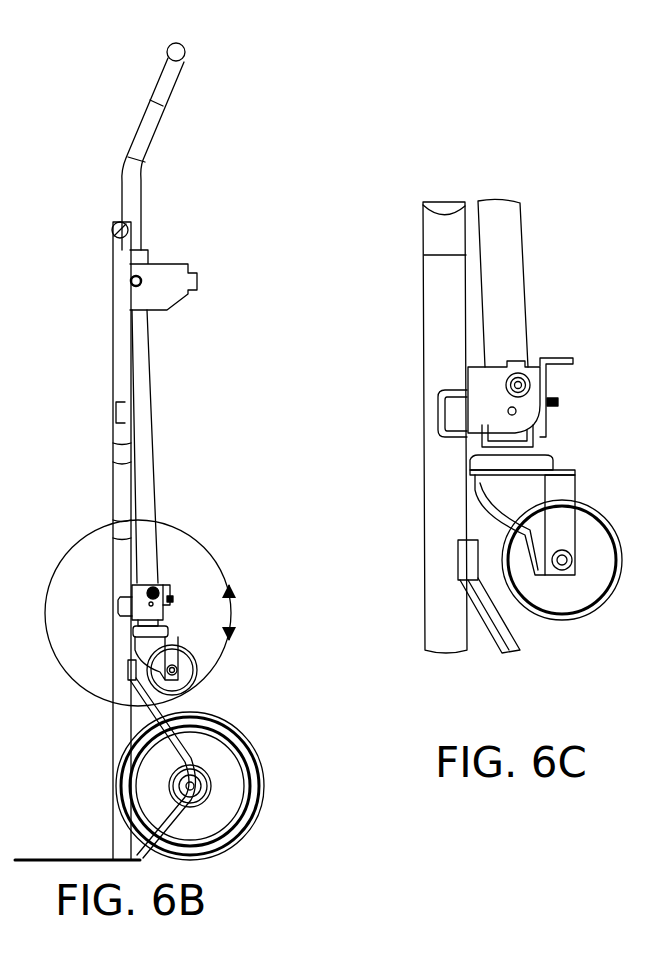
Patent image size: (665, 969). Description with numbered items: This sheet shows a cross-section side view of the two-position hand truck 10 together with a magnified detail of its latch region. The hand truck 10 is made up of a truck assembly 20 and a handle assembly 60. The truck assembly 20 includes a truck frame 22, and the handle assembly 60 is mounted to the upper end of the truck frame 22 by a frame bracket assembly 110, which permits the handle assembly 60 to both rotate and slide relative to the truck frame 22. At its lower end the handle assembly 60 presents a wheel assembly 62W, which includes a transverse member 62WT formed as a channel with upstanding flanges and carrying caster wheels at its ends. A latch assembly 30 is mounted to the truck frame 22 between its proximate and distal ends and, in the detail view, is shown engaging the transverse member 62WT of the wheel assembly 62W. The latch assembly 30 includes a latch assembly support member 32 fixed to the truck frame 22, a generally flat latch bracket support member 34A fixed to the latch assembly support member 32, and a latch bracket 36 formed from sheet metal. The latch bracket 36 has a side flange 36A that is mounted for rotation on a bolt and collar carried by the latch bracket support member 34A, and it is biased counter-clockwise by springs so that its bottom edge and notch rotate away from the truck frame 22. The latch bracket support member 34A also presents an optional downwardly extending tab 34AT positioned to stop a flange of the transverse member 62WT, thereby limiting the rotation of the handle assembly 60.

In FIG. 6B, the two-position hand truck 10 is at (219, 142).
In FIG. 6B, the truck assembly 20 is at (82, 487).
In FIG. 6B, the truck frame 22 is at (100, 325).
In FIG. 6C, the truck frame 22 is at (405, 530).
In FIG. 6B, the latch assembly 30 is at (157, 640).
In FIG. 6C, the latch assembly 30 is at (586, 335).
In FIG. 6C, the latch assembly support member 32 is at (458, 437).
In FIG. 6C, the latch bracket support member 34A is at (458, 408).
In FIG. 6C, the downwardly extending tab 34AT is at (470, 444).
In FIG. 6C, the latch bracket 36 is at (549, 355).
In FIG. 6C, the side flange 36A is at (472, 386).
In FIG. 6B, the handle assembly 60 is at (165, 383).
In FIG. 6C, the handle assembly 60 is at (531, 252).
In FIG. 6B, the wheel assembly 62W is at (172, 670).
In FIG. 6C, the wheel assembly 62W is at (584, 628).
In FIG. 6C, the transverse member 62WT is at (538, 435).
In FIG. 6B, the frame bracket assembly 110 is at (180, 250).